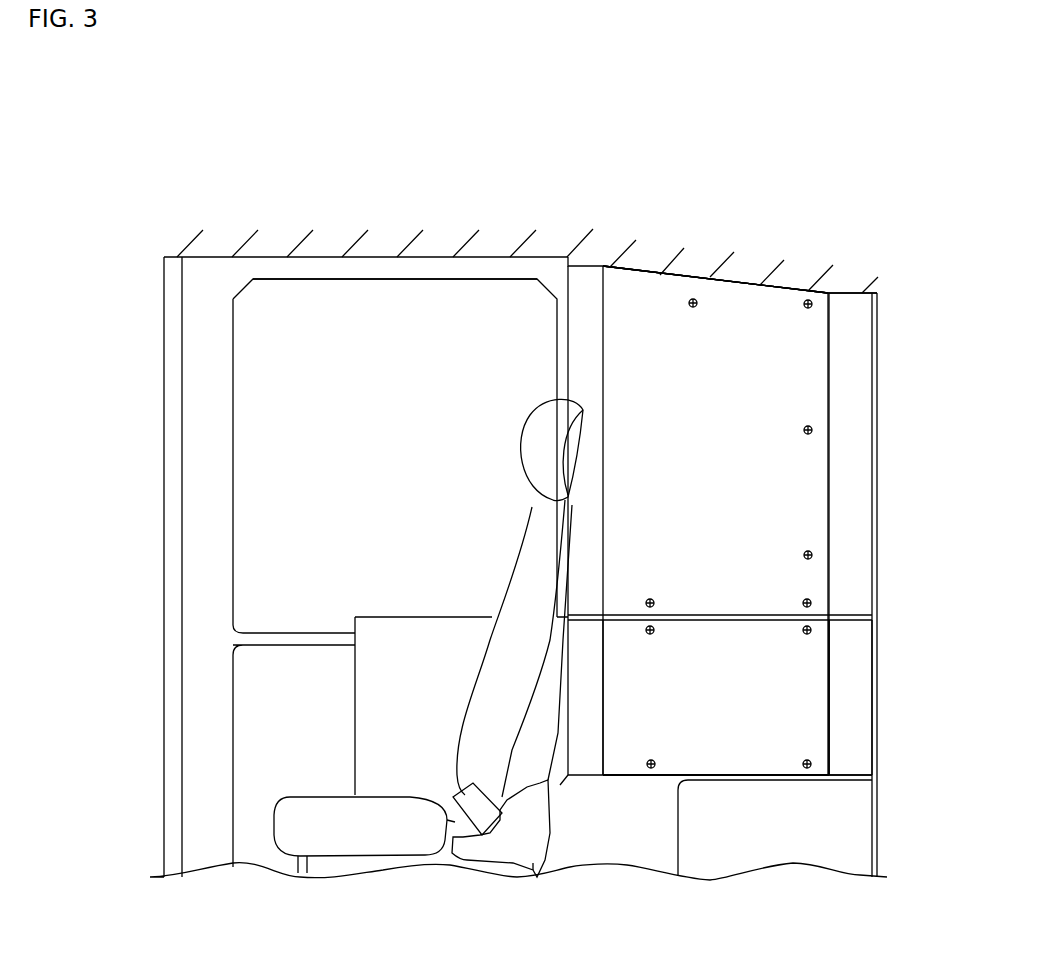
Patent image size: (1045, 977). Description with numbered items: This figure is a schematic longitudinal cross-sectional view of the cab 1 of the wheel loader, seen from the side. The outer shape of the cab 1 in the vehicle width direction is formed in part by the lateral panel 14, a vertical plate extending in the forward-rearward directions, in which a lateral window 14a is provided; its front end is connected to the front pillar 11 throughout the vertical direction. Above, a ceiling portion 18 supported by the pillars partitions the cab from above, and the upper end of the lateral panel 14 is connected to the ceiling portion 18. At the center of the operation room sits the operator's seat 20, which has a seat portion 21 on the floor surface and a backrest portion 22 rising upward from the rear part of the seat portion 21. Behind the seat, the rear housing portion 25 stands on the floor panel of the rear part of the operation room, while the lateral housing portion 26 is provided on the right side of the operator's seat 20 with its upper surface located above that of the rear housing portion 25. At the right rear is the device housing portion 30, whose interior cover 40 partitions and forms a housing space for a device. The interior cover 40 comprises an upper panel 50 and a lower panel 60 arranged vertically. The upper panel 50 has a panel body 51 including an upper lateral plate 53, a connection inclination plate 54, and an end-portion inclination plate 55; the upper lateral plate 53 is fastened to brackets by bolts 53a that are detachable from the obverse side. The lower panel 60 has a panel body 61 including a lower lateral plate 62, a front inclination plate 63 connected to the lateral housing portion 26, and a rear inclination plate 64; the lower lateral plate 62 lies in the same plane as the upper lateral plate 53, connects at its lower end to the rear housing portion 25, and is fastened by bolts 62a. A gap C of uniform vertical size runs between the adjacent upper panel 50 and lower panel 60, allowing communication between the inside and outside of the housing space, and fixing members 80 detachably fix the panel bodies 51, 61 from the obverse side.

The cab 1 is at (189, 170).
The front pillar 11 is at (172, 382).
The lateral panel 14 is at (315, 253).
The lateral window 14a is at (340, 310).
The ceiling portion 18 is at (435, 247).
The operator's seat 20 is at (288, 793).
The seat portion 21 is at (340, 835).
The backrest portion 22 is at (520, 585).
The rear housing portion 25 is at (742, 835).
The lateral housing portion 26 is at (388, 655).
The device housing portion 30 is at (722, 228).
The interior cover 40 is at (722, 258).
The upper panel 50 is at (775, 280).
The panel body 51 is at (739, 290).
The upper lateral plate 53 is at (650, 300).
The bolt 53a is at (692, 310).
The connection inclination plate 54 is at (585, 282).
The end-portion inclination plate 55 is at (853, 358).
The lower panel 60 is at (790, 776).
The panel body 61 is at (762, 775).
The lower lateral plate 62 is at (708, 750).
The bolt 62a is at (812, 763).
The front inclination plate 63 is at (583, 755).
The rear inclination plate 64 is at (850, 706).
The fixing member 80 is at (650, 598).
The gap C is at (855, 618).